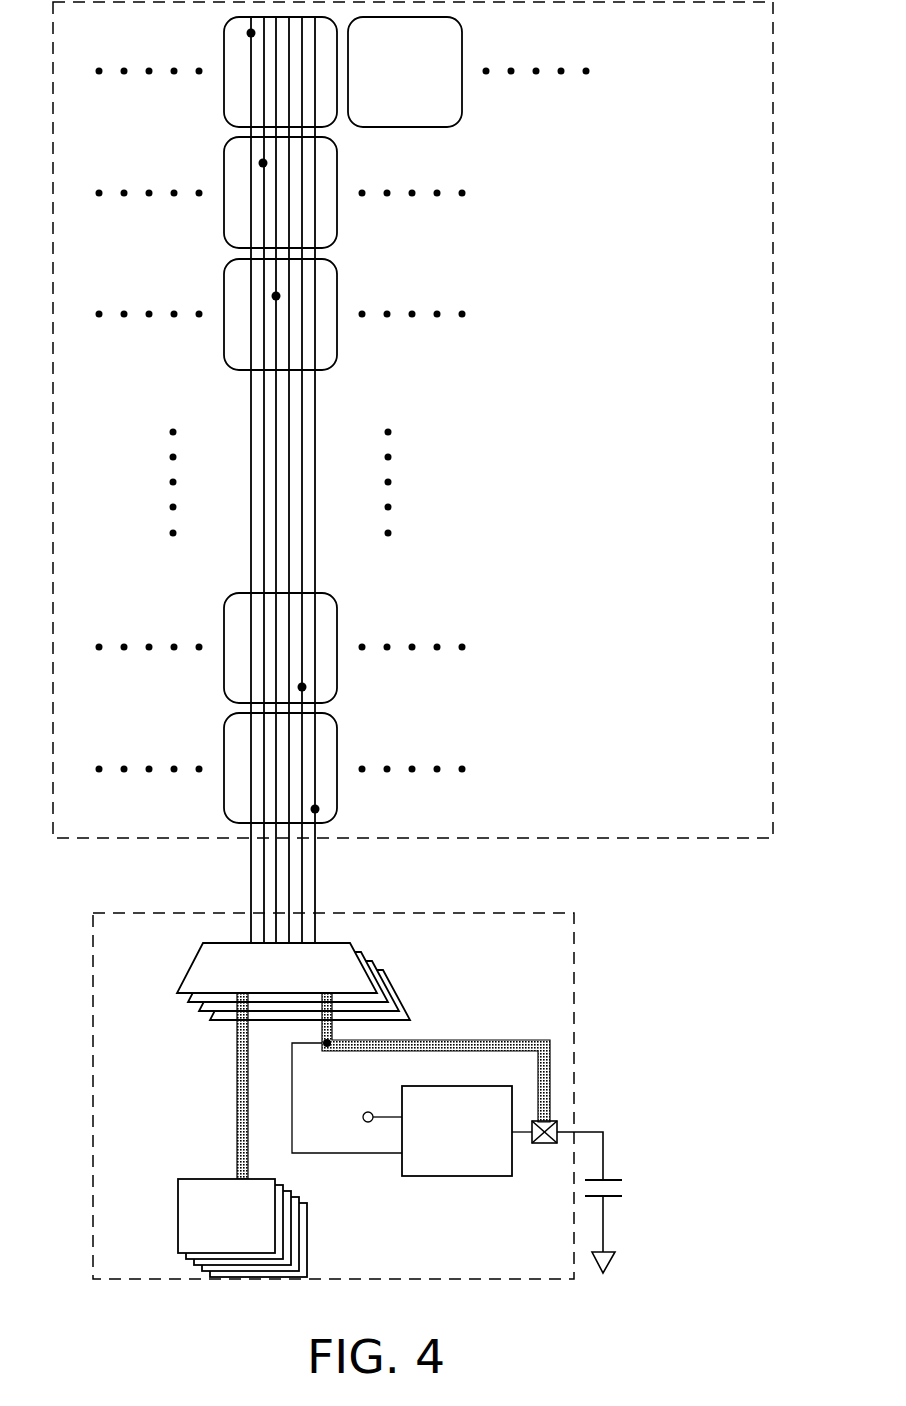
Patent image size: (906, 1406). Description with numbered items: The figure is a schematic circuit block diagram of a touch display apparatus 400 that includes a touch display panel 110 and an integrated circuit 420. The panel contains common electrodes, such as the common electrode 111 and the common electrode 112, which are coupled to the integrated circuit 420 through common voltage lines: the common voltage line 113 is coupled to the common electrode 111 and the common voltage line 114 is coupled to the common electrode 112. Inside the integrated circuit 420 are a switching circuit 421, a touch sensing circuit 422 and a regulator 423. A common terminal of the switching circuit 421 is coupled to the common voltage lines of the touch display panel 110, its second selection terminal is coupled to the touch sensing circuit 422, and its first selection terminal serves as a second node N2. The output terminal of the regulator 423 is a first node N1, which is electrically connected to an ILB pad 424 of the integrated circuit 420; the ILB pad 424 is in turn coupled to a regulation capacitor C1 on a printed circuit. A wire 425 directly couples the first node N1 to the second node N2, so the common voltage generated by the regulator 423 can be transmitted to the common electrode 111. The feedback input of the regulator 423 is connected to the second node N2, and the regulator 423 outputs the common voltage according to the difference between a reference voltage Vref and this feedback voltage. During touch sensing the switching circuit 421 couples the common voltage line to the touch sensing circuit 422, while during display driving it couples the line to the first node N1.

The touch display panel 110 is at (413, 472).
The common electrode 111 is at (224, 40).
The common electrode 112 is at (224, 737).
The common voltage line 113 is at (250, 558).
The common voltage line 114 is at (316, 558).
The touch display apparatus 400 is at (413, 669).
The integrated circuit 420 is at (576, 1003).
The switching circuit 421 is at (195, 966).
The touch sensing circuit 422 is at (178, 1210).
The regulator 423 is at (462, 1176).
The ILB pad 424 is at (558, 1122).
The wire 425 is at (452, 1040).
The regulation capacitor C1 is at (628, 1188).
The first node N1 is at (550, 1162).
The second node N2 is at (347, 1096).
The reference voltage Vref is at (360, 1117).